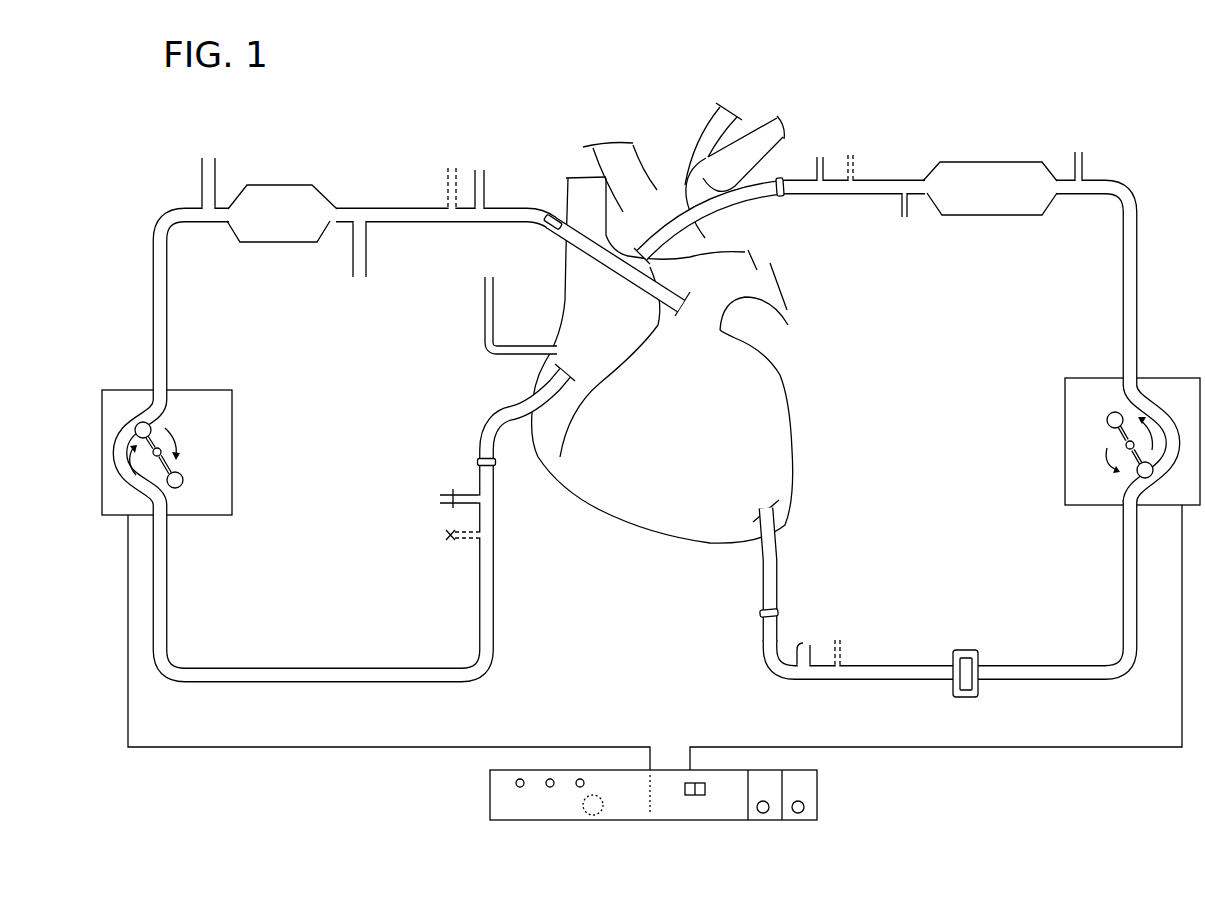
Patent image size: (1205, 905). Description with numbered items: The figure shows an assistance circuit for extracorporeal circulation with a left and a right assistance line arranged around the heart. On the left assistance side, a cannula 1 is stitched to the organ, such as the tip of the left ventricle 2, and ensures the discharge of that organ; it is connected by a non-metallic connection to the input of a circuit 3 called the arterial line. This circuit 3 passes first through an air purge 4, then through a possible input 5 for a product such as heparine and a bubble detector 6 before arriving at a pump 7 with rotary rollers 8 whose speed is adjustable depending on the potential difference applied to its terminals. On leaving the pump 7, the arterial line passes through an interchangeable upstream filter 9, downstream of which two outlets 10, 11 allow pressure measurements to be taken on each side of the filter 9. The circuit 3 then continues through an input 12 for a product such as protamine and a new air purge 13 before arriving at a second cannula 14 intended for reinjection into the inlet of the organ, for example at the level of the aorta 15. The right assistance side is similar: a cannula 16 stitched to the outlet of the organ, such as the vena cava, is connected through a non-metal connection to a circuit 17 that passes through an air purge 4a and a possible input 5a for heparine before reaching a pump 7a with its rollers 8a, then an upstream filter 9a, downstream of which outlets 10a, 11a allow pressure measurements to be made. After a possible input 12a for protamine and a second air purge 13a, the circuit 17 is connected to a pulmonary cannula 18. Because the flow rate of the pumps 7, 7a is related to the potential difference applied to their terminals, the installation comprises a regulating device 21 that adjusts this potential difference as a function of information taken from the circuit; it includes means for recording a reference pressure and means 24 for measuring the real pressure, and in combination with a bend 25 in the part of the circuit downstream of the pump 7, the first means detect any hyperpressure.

The cannula 1 is at (774, 534).
The left ventricle 2 is at (769, 455).
The circuit 3 is at (1035, 660).
The air purge 4 is at (798, 645).
The input 5 is at (842, 650).
The bubble detector 6 is at (953, 648).
The pump 7 is at (1090, 427).
The rotary rollers 8 is at (1140, 472).
The upstream filter 9 is at (998, 183).
The outlet 10 is at (1085, 160).
The outlet 11 is at (908, 205).
The input 12 is at (856, 168).
The air purge 13 is at (820, 155).
The second cannula 14 is at (745, 212).
The aorta 15 is at (655, 212).
The cannula 16 is at (520, 397).
The circuit 17 is at (178, 314).
The pulmonary cannula 18 is at (580, 239).
The regulating device 21 is at (830, 792).
The means for measuring the real pressure 24 is at (476, 326).
The bend 25 is at (1141, 184).
The connection port 4a is at (440, 490).
The input 5a is at (448, 535).
The pump 7a is at (205, 421).
The pump rollers 8a is at (178, 478).
The upstream filter 9a is at (272, 205).
The outlet 10a is at (205, 172).
The outlet 11a is at (360, 260).
The input 12a is at (446, 184).
The air purge 13a is at (484, 188).